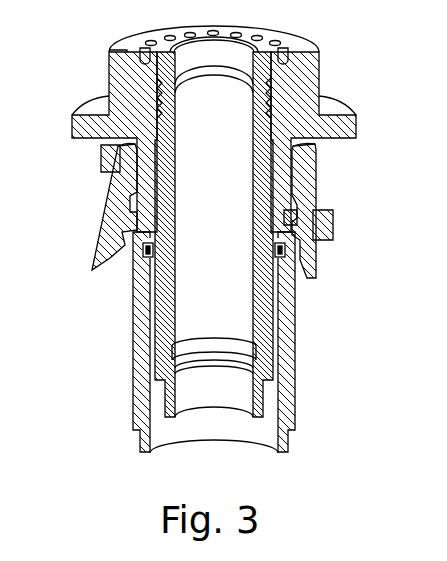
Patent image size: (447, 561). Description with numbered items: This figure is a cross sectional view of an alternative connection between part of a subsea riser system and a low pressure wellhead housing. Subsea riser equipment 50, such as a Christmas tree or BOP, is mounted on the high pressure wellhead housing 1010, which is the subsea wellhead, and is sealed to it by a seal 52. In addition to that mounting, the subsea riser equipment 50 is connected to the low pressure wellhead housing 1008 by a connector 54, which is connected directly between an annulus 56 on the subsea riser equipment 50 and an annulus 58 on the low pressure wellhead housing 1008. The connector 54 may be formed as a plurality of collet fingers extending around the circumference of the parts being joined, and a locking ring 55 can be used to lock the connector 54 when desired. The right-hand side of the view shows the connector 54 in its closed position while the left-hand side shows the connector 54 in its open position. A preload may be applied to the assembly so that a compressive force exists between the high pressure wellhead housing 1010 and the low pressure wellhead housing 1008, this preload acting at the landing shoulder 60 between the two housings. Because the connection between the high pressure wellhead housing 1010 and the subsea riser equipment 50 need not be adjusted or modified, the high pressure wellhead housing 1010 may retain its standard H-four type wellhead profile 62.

The subsea riser equipment 50 is at (303, 90).
The seal 52 is at (243, 77).
The connector 54 is at (305, 175).
The locking ring 55 is at (108, 157).
The annulus 56 is at (288, 217).
The annulus 58 is at (297, 247).
The landing shoulder 60 is at (282, 323).
The H-4 wellhead profile 62 is at (165, 113).
The low pressure wellhead housing 1008 is at (287, 378).
The high pressure wellhead housing 1010 is at (262, 285).